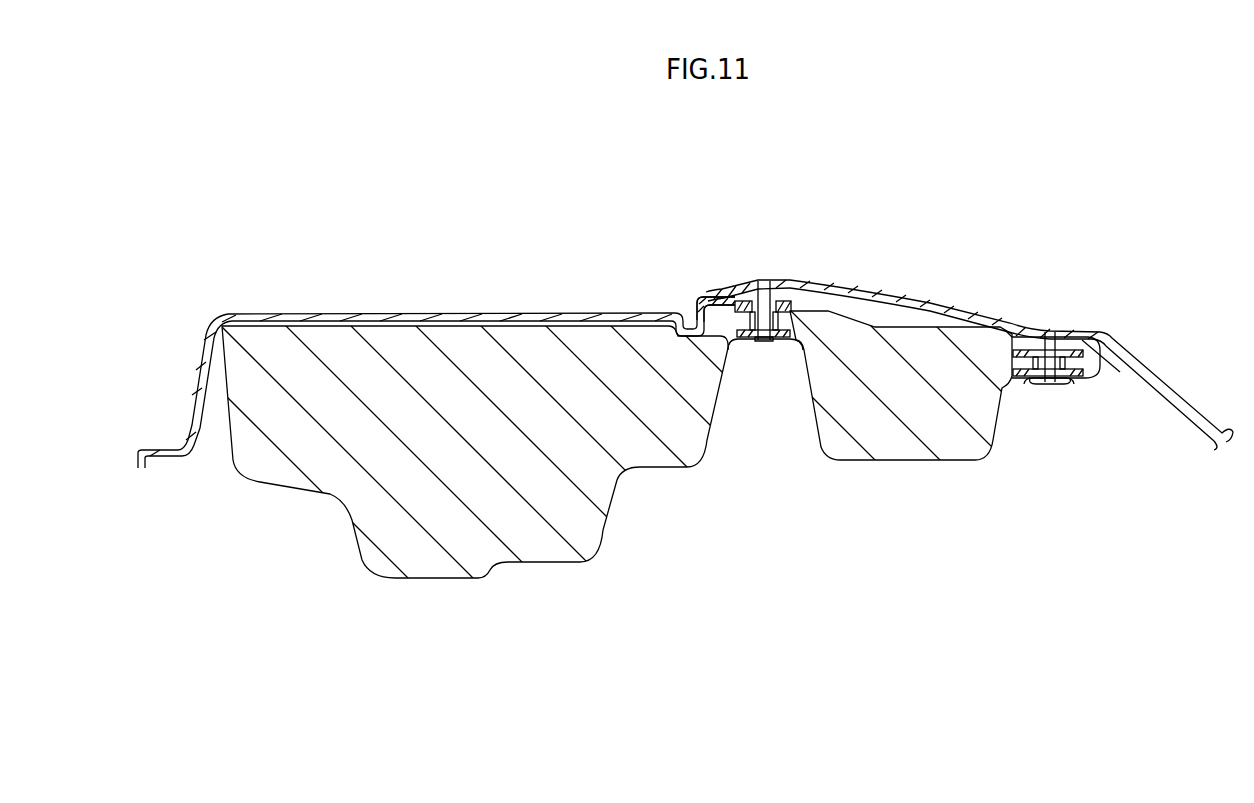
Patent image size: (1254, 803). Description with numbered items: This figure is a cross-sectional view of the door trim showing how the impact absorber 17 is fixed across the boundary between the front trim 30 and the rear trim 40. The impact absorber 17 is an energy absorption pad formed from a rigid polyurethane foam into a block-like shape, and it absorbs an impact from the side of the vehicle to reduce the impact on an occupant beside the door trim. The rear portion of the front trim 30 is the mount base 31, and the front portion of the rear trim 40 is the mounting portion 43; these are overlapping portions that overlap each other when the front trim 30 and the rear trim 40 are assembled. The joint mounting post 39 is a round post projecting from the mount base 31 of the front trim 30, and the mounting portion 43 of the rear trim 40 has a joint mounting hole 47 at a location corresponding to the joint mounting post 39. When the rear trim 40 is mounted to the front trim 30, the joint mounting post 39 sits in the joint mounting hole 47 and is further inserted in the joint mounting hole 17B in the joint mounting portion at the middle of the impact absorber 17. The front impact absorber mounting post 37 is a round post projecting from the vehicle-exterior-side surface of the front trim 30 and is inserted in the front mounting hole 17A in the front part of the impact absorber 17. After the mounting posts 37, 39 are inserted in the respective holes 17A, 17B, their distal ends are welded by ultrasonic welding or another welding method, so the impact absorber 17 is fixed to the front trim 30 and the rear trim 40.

The impact absorber 17 is at (648, 443).
The front mounting hole 17A is at (1056, 382).
The joint mounting hole 17B is at (767, 340).
The front trim 30 is at (972, 318).
The mount base 31 is at (722, 288).
The front impact absorber mounting post 37 is at (1045, 382).
The joint mounting post 39 is at (757, 338).
The rear trim 40 is at (428, 312).
The mounting portion 43 is at (716, 298).
The joint mounting hole 47 is at (772, 288).